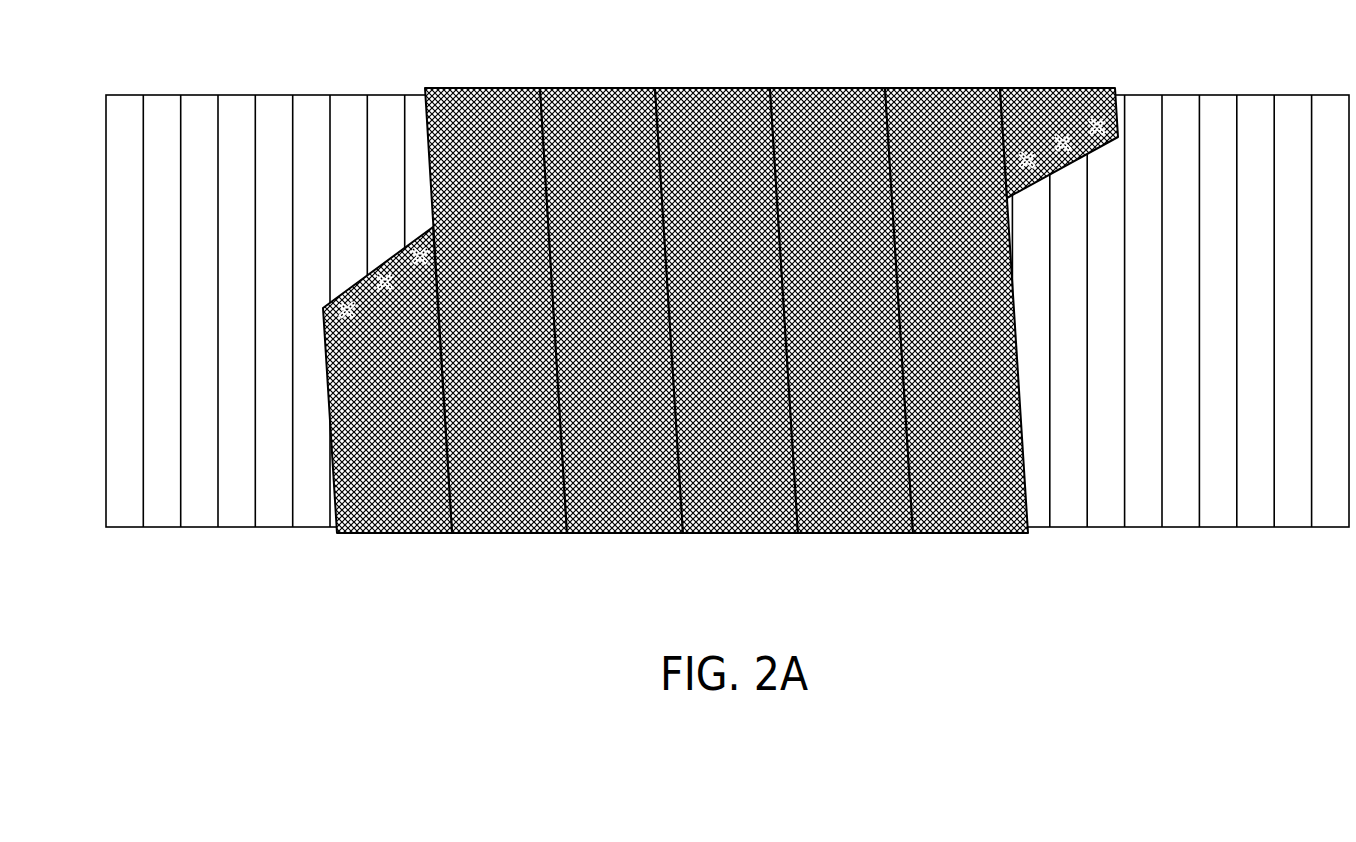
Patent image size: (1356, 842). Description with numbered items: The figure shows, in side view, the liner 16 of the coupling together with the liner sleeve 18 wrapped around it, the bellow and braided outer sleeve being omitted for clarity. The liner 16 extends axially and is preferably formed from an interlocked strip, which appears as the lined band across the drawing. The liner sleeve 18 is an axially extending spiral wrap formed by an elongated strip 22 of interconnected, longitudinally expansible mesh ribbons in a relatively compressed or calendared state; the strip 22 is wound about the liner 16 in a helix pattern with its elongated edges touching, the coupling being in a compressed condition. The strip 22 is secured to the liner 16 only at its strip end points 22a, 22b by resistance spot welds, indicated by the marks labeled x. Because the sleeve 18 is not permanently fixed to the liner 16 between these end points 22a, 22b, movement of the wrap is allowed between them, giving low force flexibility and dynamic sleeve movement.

The internal liner 16 is at (1208, 96).
The liner sleeve 18 is at (743, 332).
The strip 22 is at (513, 536).
The strip end point 22a is at (427, 223).
The strip end point 22b is at (1073, 173).